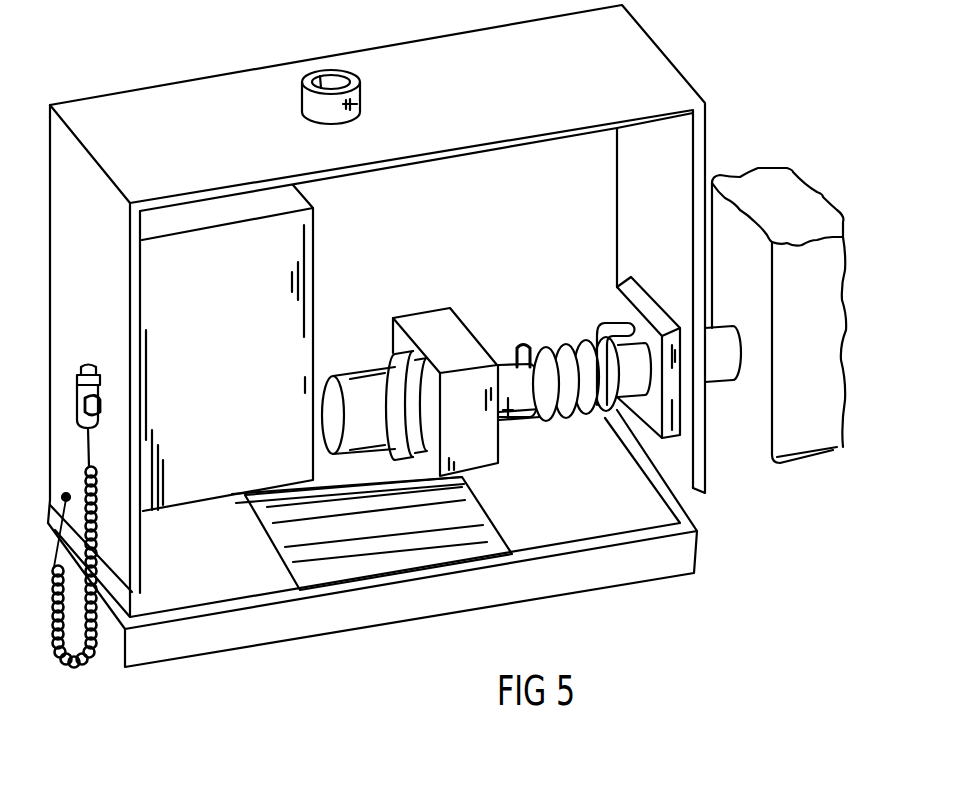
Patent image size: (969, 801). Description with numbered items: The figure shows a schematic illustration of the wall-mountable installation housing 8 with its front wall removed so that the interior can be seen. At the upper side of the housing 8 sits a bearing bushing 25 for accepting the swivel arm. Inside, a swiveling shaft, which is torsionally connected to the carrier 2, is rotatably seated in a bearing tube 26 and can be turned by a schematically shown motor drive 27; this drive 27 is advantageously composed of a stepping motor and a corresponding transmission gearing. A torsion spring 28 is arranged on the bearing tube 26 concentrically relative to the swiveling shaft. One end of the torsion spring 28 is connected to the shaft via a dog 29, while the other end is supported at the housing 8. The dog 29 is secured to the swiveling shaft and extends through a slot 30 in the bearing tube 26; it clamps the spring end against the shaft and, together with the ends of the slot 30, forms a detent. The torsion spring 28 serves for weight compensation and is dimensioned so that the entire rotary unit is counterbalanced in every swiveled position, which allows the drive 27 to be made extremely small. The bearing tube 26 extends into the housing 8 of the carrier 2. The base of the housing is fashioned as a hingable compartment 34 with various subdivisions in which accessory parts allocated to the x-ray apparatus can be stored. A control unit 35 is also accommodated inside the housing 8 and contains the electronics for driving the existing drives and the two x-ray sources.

The carrier 2 is at (810, 432).
The housing 8 is at (143, 115).
The bearing bushing 25 is at (345, 106).
The bearing tube 26 is at (504, 420).
The motor drive 27 is at (362, 387).
The torsion spring 28 is at (570, 340).
The dog 29 is at (517, 347).
The slot 30 is at (533, 423).
The hingable compartment 34 is at (177, 643).
The control unit 35 is at (193, 470).